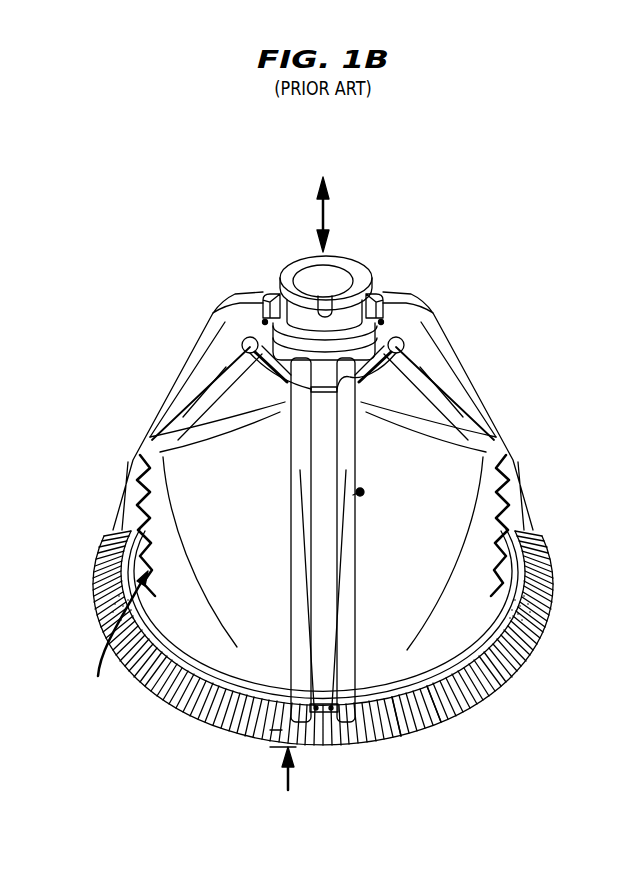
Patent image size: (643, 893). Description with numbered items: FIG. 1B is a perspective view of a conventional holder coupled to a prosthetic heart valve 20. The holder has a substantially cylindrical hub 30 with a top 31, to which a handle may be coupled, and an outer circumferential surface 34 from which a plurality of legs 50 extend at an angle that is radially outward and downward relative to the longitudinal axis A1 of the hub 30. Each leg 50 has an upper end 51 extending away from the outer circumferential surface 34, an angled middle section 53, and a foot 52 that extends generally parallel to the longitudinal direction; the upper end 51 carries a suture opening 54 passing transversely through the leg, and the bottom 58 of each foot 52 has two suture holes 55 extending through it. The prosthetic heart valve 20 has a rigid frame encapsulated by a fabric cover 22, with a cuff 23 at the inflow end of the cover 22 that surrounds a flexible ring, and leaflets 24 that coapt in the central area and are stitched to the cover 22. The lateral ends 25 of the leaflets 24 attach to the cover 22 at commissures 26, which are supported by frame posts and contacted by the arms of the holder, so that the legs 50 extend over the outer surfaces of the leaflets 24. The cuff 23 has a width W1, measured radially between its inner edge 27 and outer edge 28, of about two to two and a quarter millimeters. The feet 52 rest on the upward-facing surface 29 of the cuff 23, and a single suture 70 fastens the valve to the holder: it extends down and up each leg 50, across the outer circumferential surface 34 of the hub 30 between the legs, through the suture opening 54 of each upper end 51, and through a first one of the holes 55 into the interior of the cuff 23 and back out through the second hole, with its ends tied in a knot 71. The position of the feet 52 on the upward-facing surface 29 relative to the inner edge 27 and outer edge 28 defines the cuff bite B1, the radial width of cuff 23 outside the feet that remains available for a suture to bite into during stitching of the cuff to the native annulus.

The prosthetic heart valve 20 is at (360, 631).
The cover 22 is at (360, 638).
The cuff 23 is at (455, 739).
The leaflets 24 is at (292, 600).
The lateral ends 25 is at (362, 525).
The commissures 26 is at (539, 525).
The inner edge 27 is at (342, 638).
The outer edge 28 is at (339, 623).
The upward-facing surface 29 is at (412, 752).
The hub 30 is at (316, 276).
The top 31 is at (307, 254).
The outer circumferential surface 34 is at (284, 291).
The legs 50 is at (320, 398).
The upper end 51 is at (358, 290).
The foot 52 is at (359, 743).
The angled middle section 53 is at (323, 421).
The suture opening 54 is at (349, 388).
The suture holes 55 is at (331, 760).
The bottom 58 is at (351, 754).
The suture 70 is at (388, 586).
The knot 71 is at (462, 474).
The longitudinal axis A1 is at (348, 214).
The cuff bite B1 is at (260, 771).
The width W1 is at (108, 629).